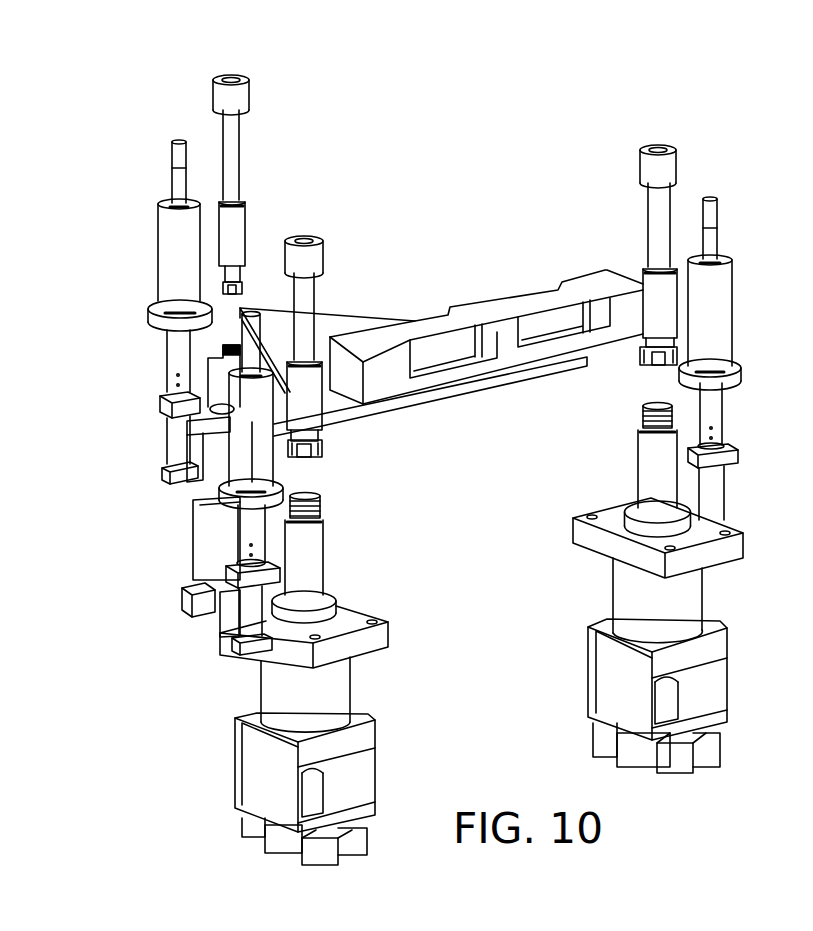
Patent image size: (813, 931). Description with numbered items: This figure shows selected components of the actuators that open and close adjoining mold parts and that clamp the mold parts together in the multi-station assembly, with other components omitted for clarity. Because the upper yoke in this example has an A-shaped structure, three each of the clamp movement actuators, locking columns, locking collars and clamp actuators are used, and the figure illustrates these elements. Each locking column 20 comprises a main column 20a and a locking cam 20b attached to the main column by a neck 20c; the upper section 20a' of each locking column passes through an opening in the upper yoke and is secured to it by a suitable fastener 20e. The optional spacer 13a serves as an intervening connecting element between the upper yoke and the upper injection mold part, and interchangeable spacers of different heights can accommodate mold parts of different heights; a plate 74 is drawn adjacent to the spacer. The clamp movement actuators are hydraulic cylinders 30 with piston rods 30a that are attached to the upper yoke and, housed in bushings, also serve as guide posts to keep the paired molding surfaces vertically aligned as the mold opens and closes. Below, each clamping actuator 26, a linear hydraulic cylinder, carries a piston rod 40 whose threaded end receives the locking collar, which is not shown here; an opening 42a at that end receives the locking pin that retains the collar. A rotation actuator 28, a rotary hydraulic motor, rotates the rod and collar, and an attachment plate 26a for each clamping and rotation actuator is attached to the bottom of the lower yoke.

The locking column 20 is at (252, 73).
The fastener 20e is at (228, 101).
The section of locking column 20a' is at (401, 263).
The main column 20a is at (626, 296).
The neck 20c is at (322, 443).
The locking cam 20b is at (311, 455).
The piston rod 30a is at (175, 190).
The hydraulic cylinder 30 is at (178, 436).
The mounting plate 74 is at (328, 325).
The spacer 13a is at (523, 308).
The opening 42a is at (643, 413).
The piston rod 40 is at (660, 462).
The attachment plate 26a is at (588, 533).
The clamping actuator 26 is at (677, 597).
The rotation actuator 28 is at (658, 700).